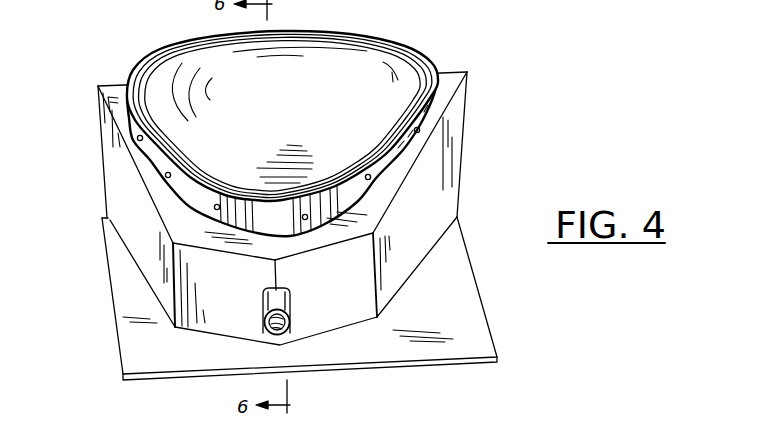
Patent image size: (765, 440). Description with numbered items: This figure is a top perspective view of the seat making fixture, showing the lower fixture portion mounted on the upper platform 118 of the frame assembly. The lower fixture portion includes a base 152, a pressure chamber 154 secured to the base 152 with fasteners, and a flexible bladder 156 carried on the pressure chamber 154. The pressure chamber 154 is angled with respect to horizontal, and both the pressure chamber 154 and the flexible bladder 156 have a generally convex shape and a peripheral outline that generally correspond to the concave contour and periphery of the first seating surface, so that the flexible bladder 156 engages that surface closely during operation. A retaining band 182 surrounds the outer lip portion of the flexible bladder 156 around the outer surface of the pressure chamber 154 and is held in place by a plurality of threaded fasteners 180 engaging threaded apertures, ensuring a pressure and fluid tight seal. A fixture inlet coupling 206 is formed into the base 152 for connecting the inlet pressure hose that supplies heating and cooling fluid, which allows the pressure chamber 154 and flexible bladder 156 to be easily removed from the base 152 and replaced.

The upper platform 118 is at (463, 340).
The base 152 is at (447, 157).
The pressure chamber 154 is at (442, 103).
The flexible bladder 156 is at (375, 62).
The threaded fasteners 180 is at (165, 176).
The retaining band 182 is at (150, 156).
The fixture inlet coupling 206 is at (300, 338).